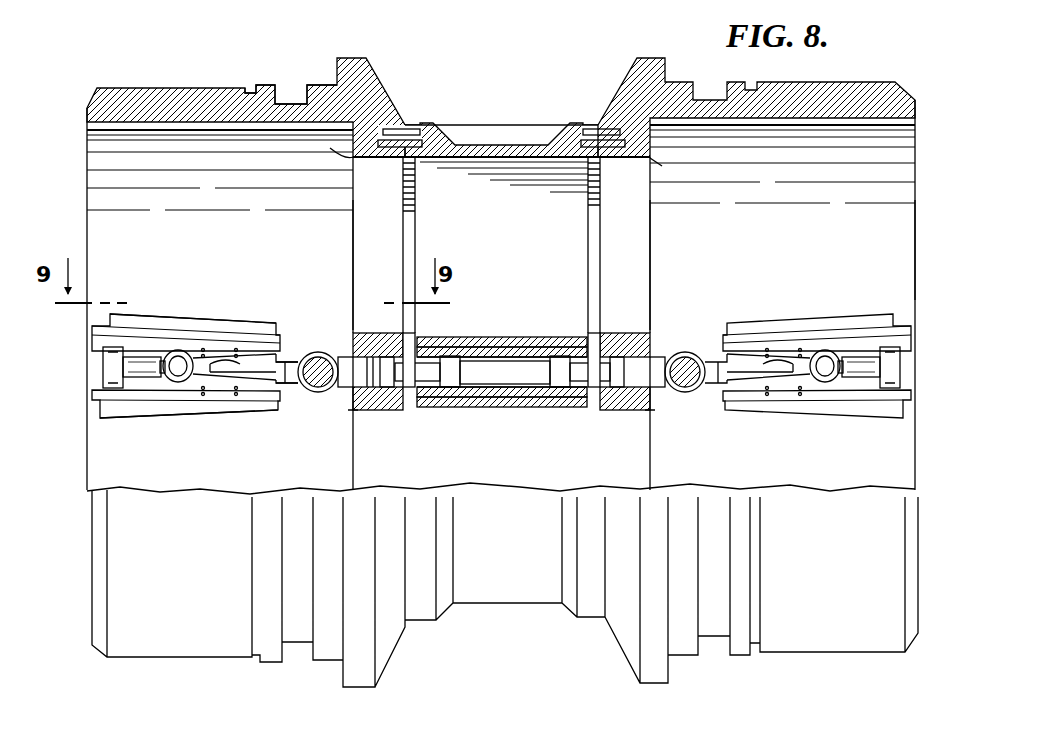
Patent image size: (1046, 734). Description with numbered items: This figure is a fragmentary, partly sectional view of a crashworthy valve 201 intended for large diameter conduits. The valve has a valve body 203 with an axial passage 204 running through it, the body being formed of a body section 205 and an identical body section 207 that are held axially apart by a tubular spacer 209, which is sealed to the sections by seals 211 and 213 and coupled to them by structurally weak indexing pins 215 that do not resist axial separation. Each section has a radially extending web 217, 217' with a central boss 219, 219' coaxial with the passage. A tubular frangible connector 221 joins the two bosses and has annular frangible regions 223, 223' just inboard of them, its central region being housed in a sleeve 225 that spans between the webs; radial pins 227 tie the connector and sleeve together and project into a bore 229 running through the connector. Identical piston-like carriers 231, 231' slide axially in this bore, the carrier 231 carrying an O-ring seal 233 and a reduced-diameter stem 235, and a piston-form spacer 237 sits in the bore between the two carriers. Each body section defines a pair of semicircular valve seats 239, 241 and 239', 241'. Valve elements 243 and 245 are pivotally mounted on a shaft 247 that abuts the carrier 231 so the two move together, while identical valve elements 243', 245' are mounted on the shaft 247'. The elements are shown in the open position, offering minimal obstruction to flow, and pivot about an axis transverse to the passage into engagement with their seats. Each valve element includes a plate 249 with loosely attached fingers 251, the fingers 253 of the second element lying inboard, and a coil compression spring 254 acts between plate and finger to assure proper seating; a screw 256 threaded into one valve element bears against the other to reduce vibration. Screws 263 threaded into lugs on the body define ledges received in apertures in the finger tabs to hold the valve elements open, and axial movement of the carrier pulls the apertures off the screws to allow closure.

The crashworthy valve 201 is at (438, 78).
The valve body 203 is at (152, 90).
The axial passage 204 is at (882, 228).
The body section 205 is at (186, 102).
The body section 207 is at (835, 95).
The tubular spacer 209 is at (482, 145).
The seal 211 is at (402, 163).
The seal 213 is at (601, 163).
The indexing pin 215 is at (400, 137).
The web 217 is at (320, 265).
The web 217' is at (688, 265).
The boss 219 is at (356, 340).
The boss 219' is at (653, 345).
The tubular frangible connector 221 is at (532, 410).
The annular frangible region 223 is at (389, 397).
The annular frangible region 223' is at (616, 397).
The sleeve 225 is at (472, 410).
The radial pin 227 is at (430, 338).
The bore 229 is at (425, 395).
The carrier 231 is at (454, 403).
The carrier 231' is at (690, 394).
The O-ring seal 233 is at (348, 352).
The stem 235 is at (372, 345).
The spacer 237 is at (517, 360).
The valve seat 239 is at (315, 103).
The valve seat 239' is at (702, 179).
The valve seat 241 is at (328, 431).
The valve seat 241' is at (685, 426).
The valve element 243 is at (186, 305).
The valve element 243' is at (817, 303).
The valve element 245 is at (186, 434).
The valve element 245' is at (817, 425).
The shaft 247 is at (319, 389).
The shaft 247' is at (711, 338).
The plate 249 is at (168, 345).
The finger 251 is at (300, 352).
The finger 253 is at (250, 400).
The coil compression spring 254 is at (240, 352).
The screw 256 is at (106, 372).
The screw 263 is at (174, 331).